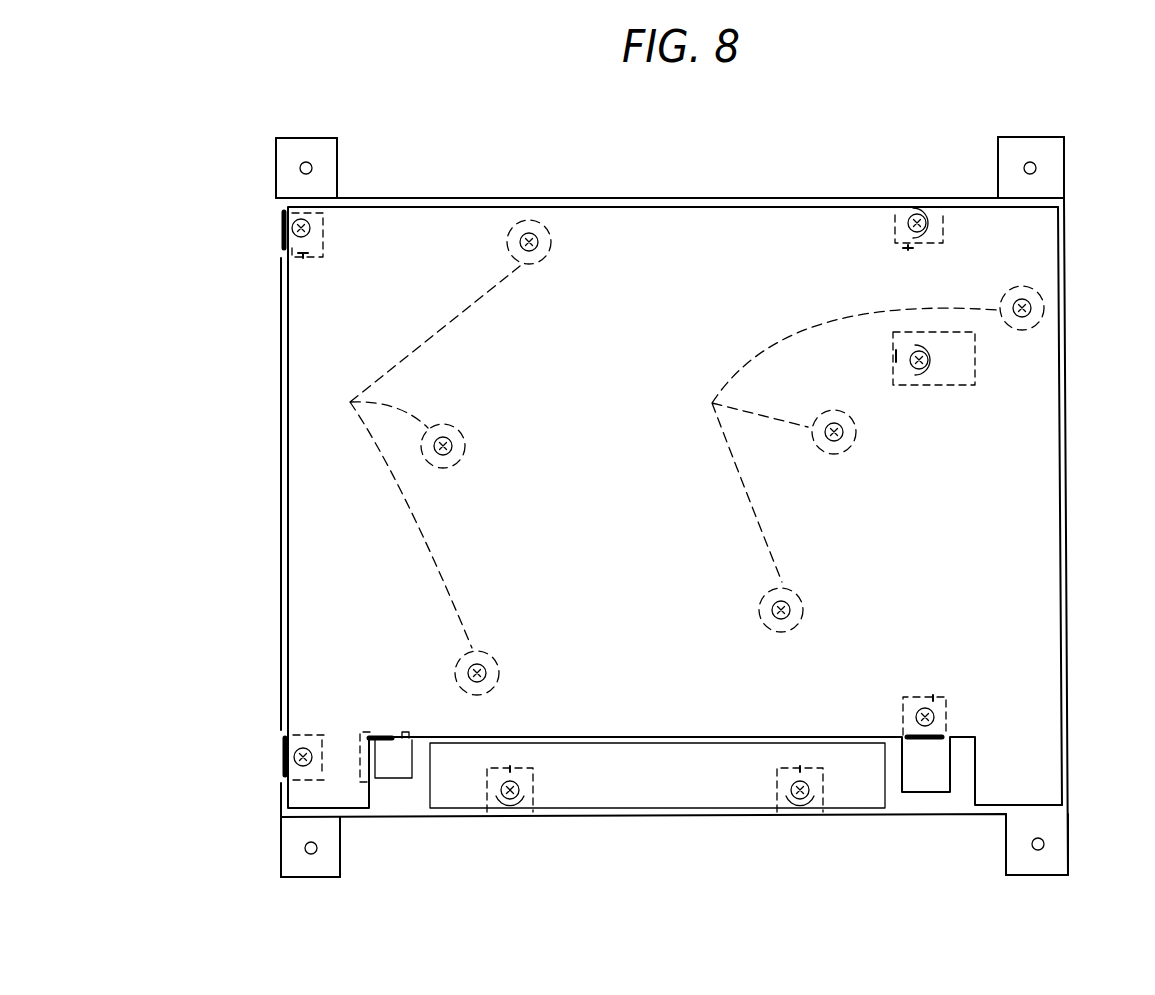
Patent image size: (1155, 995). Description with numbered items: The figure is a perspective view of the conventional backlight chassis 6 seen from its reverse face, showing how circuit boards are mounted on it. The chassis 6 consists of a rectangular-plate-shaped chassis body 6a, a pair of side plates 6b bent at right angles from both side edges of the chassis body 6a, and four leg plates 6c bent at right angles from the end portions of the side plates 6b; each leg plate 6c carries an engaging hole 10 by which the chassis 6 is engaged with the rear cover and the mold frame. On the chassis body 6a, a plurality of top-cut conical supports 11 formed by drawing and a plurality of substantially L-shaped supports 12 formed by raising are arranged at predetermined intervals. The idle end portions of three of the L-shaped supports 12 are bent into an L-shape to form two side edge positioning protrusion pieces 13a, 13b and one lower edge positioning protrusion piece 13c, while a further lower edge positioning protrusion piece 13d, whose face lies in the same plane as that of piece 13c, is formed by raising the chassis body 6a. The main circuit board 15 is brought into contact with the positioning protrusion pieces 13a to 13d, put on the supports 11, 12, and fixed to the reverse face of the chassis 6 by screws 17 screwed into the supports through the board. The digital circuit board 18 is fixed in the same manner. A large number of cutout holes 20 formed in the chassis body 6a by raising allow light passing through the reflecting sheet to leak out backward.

The backlight chassis 6 is at (1072, 418).
The chassis body 6a is at (1068, 500).
The side plates 6b is at (745, 197).
The leg plates 6c is at (276, 163).
The engaging holes 10 is at (313, 168).
The top-cut conical supports 11 is at (659, 457).
The substantially L-shaped supports 12 is at (304, 256).
The side edge positioning protrusion piece 13a is at (283, 228).
The side edge positioning protrusion piece 13b is at (283, 757).
The lower edge positioning protrusion piece 13c is at (925, 741).
The lower edge positioning protrusion piece 13d is at (385, 737).
The main circuit board 15 is at (657, 232).
The screws 17 is at (452, 441).
The digital circuit board 18 is at (600, 775).
The cutout holes 20 is at (323, 232).